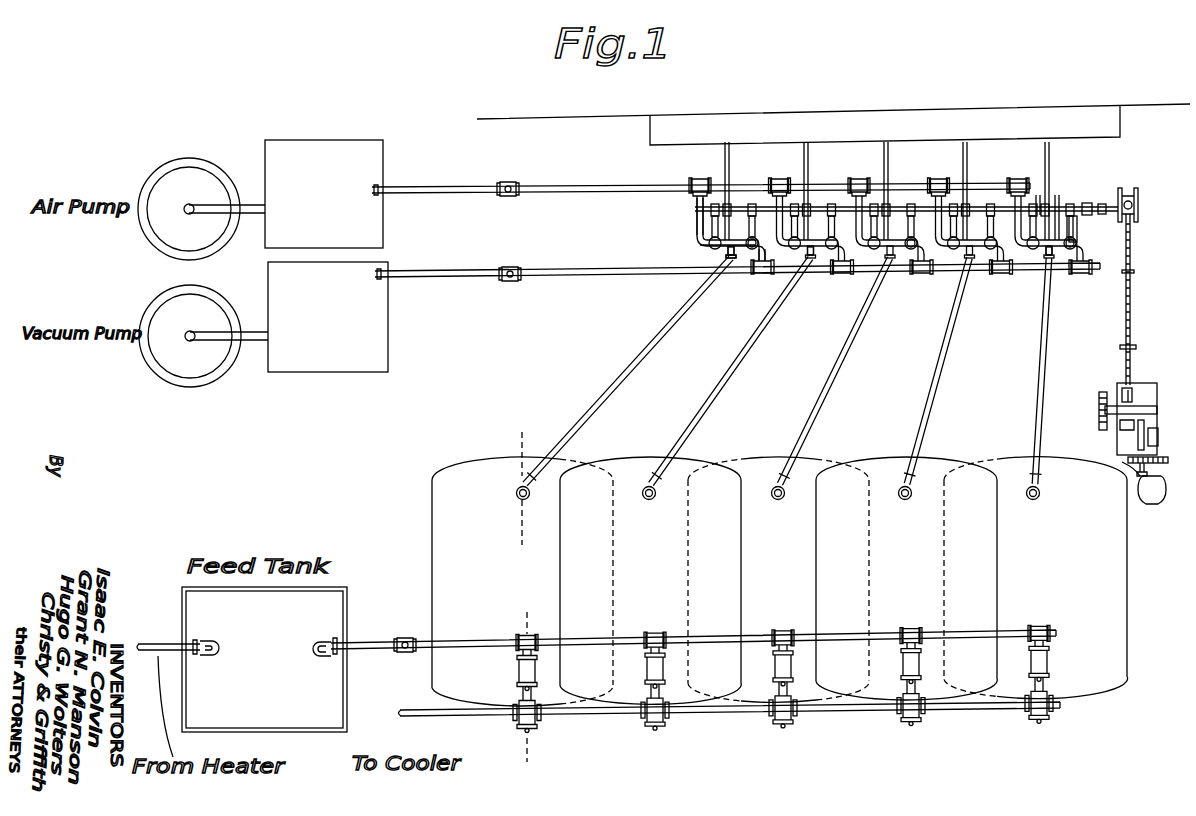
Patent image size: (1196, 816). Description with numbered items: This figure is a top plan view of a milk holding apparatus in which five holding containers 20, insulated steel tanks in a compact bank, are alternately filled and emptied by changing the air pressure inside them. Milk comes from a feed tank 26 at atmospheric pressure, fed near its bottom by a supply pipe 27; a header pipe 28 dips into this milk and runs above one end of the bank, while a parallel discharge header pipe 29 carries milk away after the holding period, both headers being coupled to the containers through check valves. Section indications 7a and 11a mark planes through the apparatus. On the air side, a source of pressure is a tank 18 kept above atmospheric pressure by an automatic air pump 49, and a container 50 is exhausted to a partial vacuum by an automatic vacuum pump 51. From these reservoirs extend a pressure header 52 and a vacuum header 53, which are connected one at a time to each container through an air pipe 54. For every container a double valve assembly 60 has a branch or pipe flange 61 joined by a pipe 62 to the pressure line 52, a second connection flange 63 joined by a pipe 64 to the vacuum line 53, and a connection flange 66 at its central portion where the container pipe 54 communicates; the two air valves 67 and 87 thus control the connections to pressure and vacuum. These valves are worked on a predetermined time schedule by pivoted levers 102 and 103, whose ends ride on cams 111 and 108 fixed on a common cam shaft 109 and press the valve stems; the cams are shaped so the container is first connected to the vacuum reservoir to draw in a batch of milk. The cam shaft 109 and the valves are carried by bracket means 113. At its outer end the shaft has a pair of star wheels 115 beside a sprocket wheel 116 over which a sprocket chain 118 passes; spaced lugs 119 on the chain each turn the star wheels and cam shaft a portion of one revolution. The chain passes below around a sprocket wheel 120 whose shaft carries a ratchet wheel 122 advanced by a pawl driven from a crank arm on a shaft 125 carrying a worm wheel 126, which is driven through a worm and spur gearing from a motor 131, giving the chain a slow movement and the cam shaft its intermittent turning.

The air pressure reservoir 18 is at (332, 140).
The automatic air pump 49 is at (210, 153).
The partial vacuum container 50 is at (338, 368).
The automatic vacuum pump 51 is at (172, 382).
The pressure header 52 is at (597, 174).
The vacuum header 53 is at (578, 272).
The air pipe 54 is at (737, 361).
The valve assembly 60 is at (729, 258).
The branch or pipe flange 61 is at (703, 245).
The pipe 62 is at (697, 222).
The connection flange 63 is at (751, 252).
The pipe 64 is at (763, 266).
The connection flange 66 is at (732, 260).
The air valve 67 is at (812, 262).
The air valve 87 is at (912, 250).
The pivoted lever 102 is at (1057, 198).
The pivoted lever 103 is at (1078, 222).
The cam 108 is at (1052, 211).
The cam shaft 109 is at (1070, 196).
The cam 111 is at (1038, 194).
The bracket means 113 is at (731, 165).
The star wheels 115 is at (1130, 188).
The sprocket wheel 116 is at (1131, 238).
The sprocket chain 118 is at (1131, 286).
The lugs 119 is at (1132, 341).
The sprocket wheel 120 is at (1138, 406).
The ratchet wheel 122 is at (1103, 392).
The shaft 125 is at (1128, 444).
The worm wheel 126 is at (1122, 466).
The motor 131 is at (1153, 506).
The section line 7a is at (523, 488).
The section line 11a is at (544, 606).
The holding containers 20 is at (582, 698).
The feed tank 26 is at (338, 616).
The supply pipe 27 is at (209, 660).
The header pipe 28 is at (385, 655).
The discharge header pipe 29 is at (483, 716).